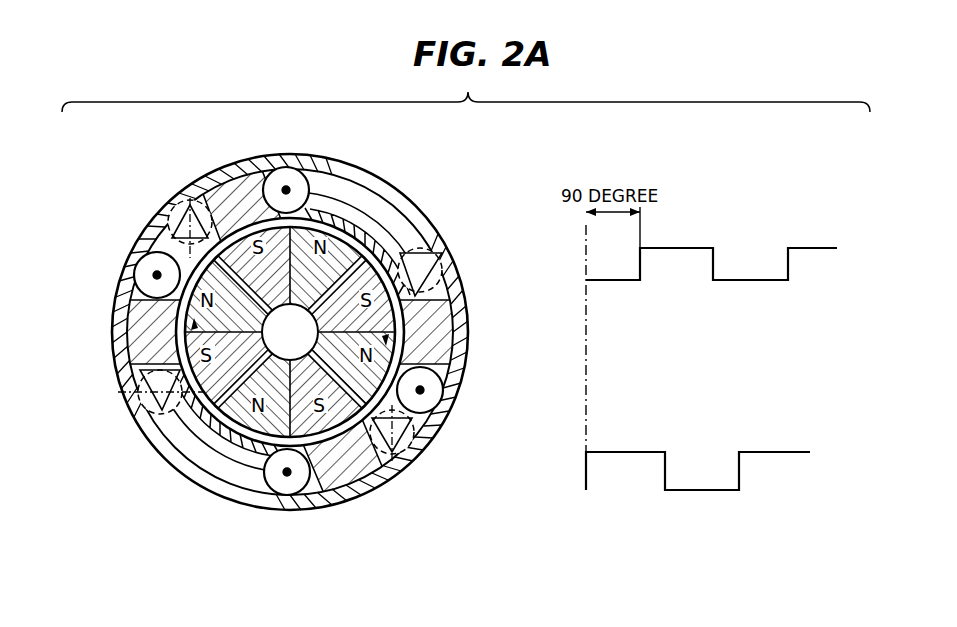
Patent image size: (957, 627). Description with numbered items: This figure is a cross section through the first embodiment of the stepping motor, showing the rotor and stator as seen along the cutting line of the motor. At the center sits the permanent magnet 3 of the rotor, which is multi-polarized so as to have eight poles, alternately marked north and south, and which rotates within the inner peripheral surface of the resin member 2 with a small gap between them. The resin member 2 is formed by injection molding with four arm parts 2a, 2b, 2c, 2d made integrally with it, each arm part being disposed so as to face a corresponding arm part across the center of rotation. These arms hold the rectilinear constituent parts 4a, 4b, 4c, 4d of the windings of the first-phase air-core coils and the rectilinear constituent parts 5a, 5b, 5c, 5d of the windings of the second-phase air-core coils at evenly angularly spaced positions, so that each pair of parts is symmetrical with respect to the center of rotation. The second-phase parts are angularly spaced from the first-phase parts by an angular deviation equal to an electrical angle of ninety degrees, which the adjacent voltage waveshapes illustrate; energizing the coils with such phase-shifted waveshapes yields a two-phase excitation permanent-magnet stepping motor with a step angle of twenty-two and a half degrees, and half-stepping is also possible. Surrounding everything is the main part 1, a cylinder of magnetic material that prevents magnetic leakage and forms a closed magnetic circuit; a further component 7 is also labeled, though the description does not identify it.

The main part 1 is at (393, 196).
The resin member 2 is at (353, 223).
The arm part 2a is at (448, 337).
The arm part 2b is at (366, 486).
The arm part 2c is at (126, 334).
The arm part 2d is at (211, 197).
The permanent magnet 3 is at (215, 437).
The rectilinear constituent part 4a is at (411, 450).
The rectilinear constituent part 4b is at (292, 493).
The rectilinear constituent part 4c is at (166, 212).
The rectilinear constituent part 4d is at (296, 178).
The rectilinear constituent part 5a is at (398, 270).
The rectilinear constituent part 5b is at (444, 393).
The rectilinear constituent part 5c is at (136, 393).
The rectilinear constituent part 5d is at (142, 264).
The rotor magnet 7 is at (373, 250).